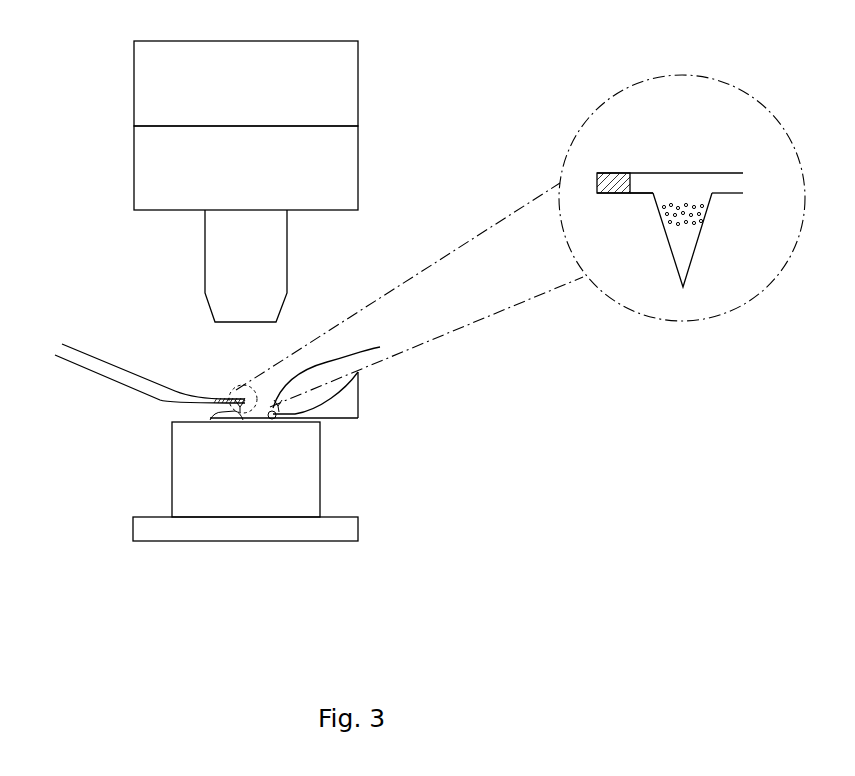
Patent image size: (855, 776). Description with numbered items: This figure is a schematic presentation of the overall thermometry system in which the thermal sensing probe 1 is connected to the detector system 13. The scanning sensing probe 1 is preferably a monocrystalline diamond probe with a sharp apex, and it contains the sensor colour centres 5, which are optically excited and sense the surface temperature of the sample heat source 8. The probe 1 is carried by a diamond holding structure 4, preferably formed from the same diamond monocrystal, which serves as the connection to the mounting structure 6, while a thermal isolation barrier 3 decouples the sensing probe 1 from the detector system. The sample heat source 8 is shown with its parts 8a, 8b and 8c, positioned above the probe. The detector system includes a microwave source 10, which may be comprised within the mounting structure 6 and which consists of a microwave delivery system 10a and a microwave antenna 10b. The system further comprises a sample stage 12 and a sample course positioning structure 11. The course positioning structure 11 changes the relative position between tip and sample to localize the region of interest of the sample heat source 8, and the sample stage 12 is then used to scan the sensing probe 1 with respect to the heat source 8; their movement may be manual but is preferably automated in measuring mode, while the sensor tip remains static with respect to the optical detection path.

The scanning sensing probe 1 is at (698, 247).
The thermal isolation barrier 3 is at (610, 180).
The diamond holding structure 4 is at (707, 177).
The sensor colour centres 5 is at (690, 207).
The mounting structure 6 is at (120, 378).
The sample heat source 8 is at (186, 181).
The tool upper part 8a is at (143, 90).
The tool lower part 8b is at (143, 171).
The tool tip 8c is at (177, 266).
The microwave source 10 is at (351, 374).
The microwave delivery system 10a is at (345, 400).
The microwave antenna 10b is at (380, 347).
The sample course positioning structure 11 is at (343, 530).
The sample stage 12 is at (308, 488).
The detector system 13 is at (590, 480).